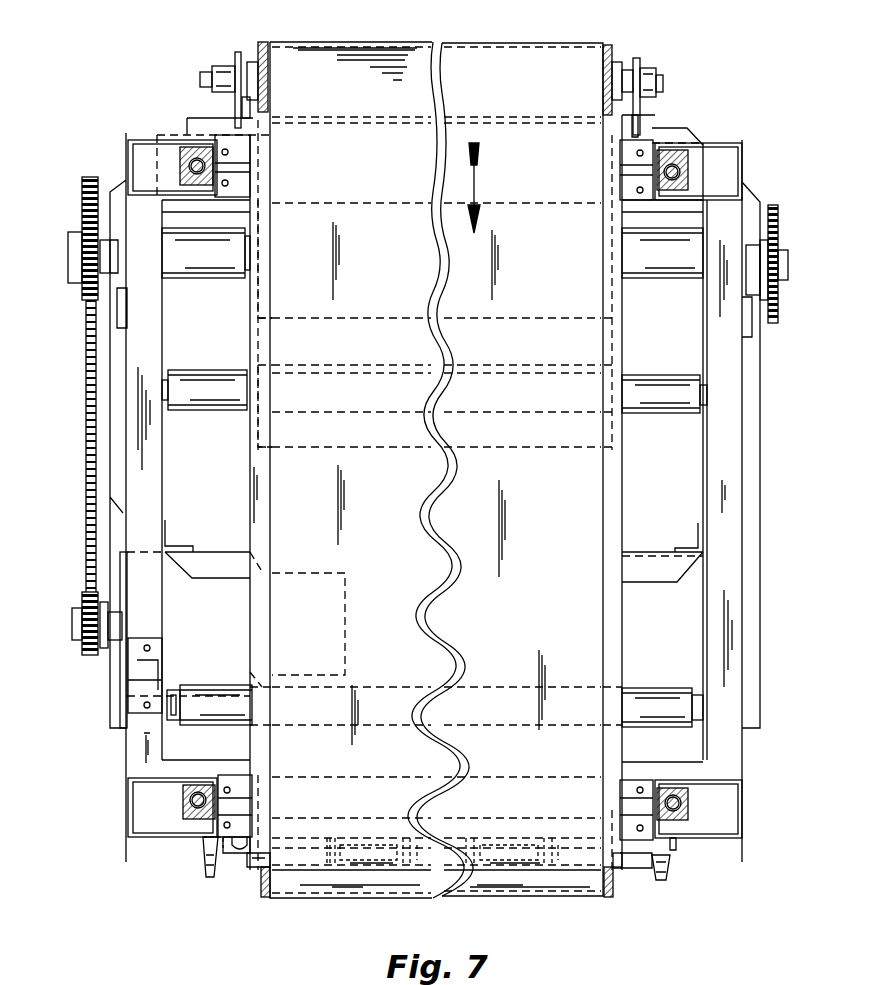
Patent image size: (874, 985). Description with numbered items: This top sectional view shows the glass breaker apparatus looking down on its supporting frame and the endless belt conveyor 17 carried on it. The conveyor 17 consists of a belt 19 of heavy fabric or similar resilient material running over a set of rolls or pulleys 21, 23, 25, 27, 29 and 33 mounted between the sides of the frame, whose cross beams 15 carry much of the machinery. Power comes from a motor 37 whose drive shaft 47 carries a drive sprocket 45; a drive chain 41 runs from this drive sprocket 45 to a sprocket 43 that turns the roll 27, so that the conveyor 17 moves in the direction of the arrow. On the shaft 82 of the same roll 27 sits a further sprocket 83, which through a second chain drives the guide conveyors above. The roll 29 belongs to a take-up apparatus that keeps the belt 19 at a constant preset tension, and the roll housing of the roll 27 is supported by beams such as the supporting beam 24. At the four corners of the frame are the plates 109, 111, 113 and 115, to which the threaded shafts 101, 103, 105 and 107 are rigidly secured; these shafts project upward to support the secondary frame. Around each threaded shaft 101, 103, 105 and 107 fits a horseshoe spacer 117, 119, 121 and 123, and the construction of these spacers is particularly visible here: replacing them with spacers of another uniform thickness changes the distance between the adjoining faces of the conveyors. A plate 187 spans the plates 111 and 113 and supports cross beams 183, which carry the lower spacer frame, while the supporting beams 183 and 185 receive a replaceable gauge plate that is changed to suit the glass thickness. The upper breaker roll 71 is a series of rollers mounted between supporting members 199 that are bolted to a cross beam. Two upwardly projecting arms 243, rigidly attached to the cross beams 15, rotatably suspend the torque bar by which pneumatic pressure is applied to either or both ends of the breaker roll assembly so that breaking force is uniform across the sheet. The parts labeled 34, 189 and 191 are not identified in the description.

The cross beam 15 is at (137, 525).
The endless belt conveyor 17 is at (425, 897).
The belt 19 is at (556, 42).
The roll or pulley 21 is at (613, 898).
The roll or pulley 23 is at (232, 688).
The supporting beam 24 is at (185, 545).
The roll or pulley 25 is at (204, 370).
The roll 27 is at (243, 330).
The roll or pulley 29 is at (250, 459).
The roll or pulley 33 is at (613, 53).
The roller shaft 34 is at (233, 62).
The motor 37 is at (122, 690).
The drive chain 41 is at (86, 390).
The sprocket 43 is at (86, 186).
The drive sprocket 45 is at (86, 597).
The drive shaft 47 is at (78, 627).
The breaker roll 71 is at (260, 867).
The shaft 82 is at (206, 277).
The sprocket 83 is at (779, 222).
The threaded shaft 101 is at (197, 160).
The threaded shaft 103 is at (193, 818).
The threaded shaft 105 is at (682, 820).
The threaded shaft 107 is at (672, 165).
The plate 109 is at (140, 153).
The plate 111 is at (142, 798).
The plate 113 is at (728, 803).
The plate 115 is at (727, 167).
The horseshoe spacer 117 is at (180, 153).
The horseshoe spacer 119 is at (182, 807).
The horseshoe spacer 121 is at (690, 813).
The horseshoe spacer 123 is at (688, 161).
The cross beam 183 is at (240, 786).
The supporting beam 185 is at (237, 828).
The plate 187 is at (632, 808).
The upper mounting hole 189 is at (640, 787).
The lower mounting hole 191 is at (640, 831).
The supporting member 199 is at (330, 868).
The upwardly projecting arm 243 is at (138, 663).